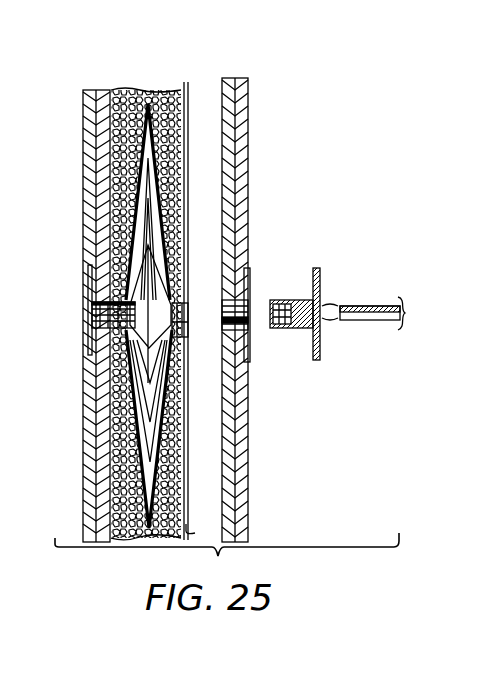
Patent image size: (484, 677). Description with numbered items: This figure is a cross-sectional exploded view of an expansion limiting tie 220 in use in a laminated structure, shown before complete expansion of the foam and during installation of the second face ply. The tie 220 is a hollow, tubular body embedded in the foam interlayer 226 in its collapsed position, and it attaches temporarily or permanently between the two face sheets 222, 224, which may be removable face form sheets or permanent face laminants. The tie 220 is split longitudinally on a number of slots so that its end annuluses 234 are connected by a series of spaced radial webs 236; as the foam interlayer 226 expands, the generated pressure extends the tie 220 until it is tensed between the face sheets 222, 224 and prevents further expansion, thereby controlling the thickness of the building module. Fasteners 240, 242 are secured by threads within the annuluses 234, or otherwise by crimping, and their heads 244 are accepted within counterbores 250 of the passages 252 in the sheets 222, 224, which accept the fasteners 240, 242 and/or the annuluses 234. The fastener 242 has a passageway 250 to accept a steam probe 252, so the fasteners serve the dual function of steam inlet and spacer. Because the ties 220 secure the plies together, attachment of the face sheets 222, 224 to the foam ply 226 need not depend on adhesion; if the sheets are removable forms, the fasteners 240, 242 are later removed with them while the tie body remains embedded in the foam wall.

The expansion limiting tie 220 is at (182, 247).
The face sheet 222 is at (83, 102).
The face sheet 224 is at (245, 110).
The foam interlayer 226 is at (137, 88).
The end annulus 234 is at (186, 300).
The radial web 236 is at (186, 84).
The fastener 240 is at (90, 314).
The fastener 242 is at (320, 298).
The fastener head 244 is at (88, 272).
The counterbore 250 is at (322, 310).
The passage 252 is at (244, 311).